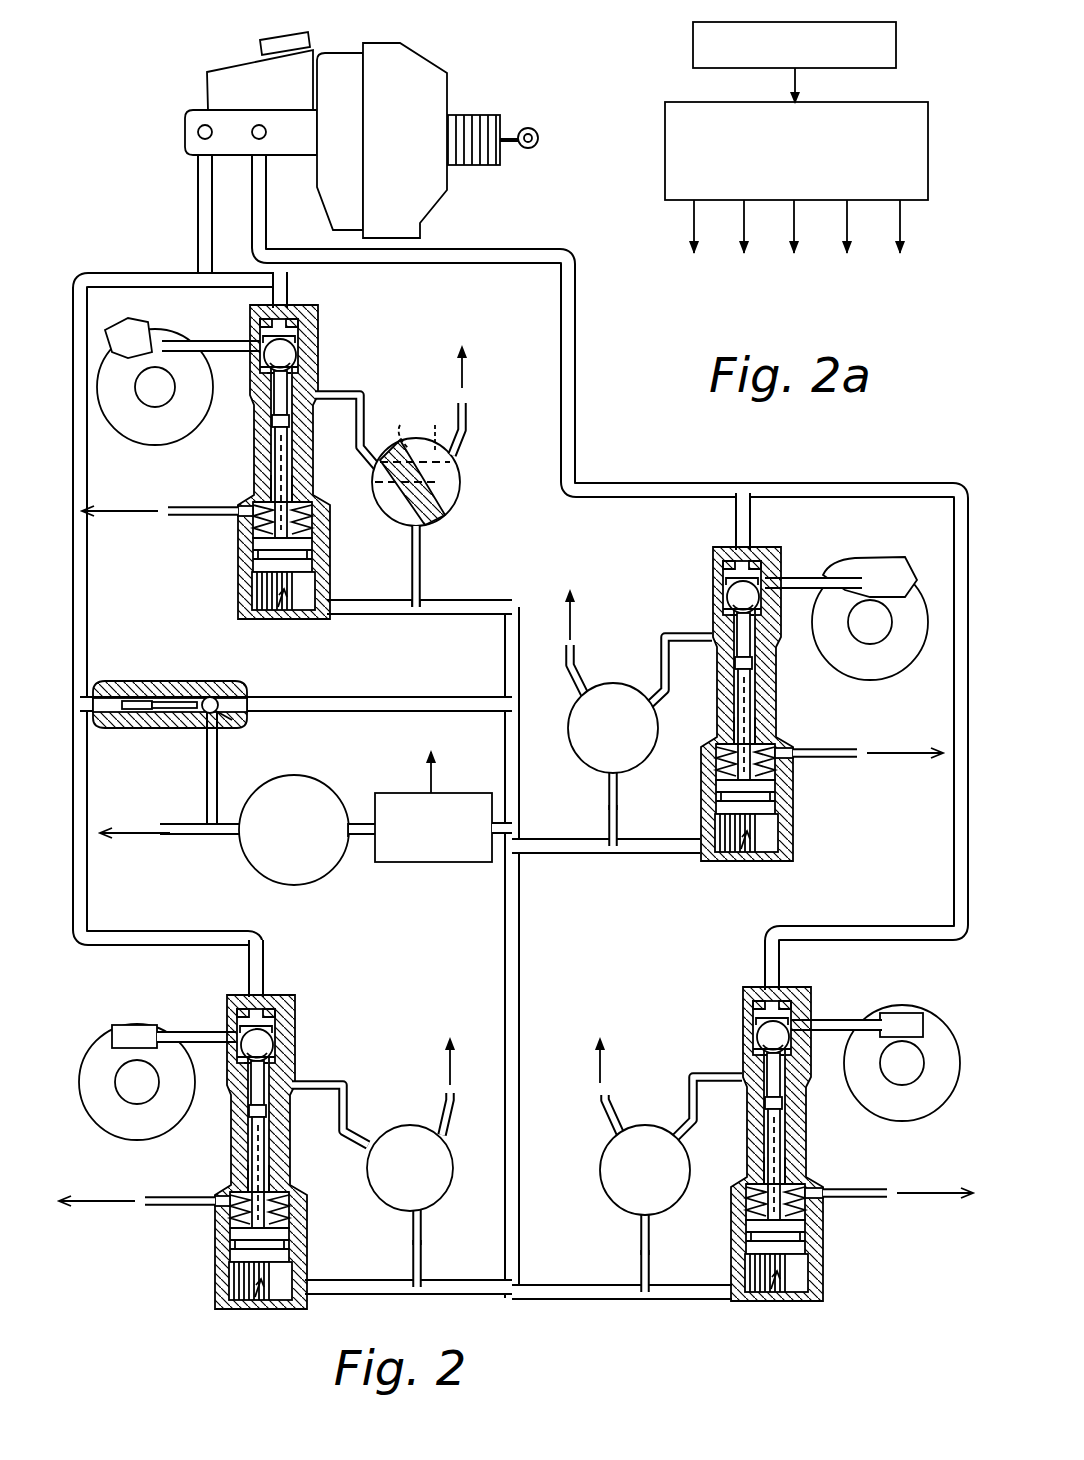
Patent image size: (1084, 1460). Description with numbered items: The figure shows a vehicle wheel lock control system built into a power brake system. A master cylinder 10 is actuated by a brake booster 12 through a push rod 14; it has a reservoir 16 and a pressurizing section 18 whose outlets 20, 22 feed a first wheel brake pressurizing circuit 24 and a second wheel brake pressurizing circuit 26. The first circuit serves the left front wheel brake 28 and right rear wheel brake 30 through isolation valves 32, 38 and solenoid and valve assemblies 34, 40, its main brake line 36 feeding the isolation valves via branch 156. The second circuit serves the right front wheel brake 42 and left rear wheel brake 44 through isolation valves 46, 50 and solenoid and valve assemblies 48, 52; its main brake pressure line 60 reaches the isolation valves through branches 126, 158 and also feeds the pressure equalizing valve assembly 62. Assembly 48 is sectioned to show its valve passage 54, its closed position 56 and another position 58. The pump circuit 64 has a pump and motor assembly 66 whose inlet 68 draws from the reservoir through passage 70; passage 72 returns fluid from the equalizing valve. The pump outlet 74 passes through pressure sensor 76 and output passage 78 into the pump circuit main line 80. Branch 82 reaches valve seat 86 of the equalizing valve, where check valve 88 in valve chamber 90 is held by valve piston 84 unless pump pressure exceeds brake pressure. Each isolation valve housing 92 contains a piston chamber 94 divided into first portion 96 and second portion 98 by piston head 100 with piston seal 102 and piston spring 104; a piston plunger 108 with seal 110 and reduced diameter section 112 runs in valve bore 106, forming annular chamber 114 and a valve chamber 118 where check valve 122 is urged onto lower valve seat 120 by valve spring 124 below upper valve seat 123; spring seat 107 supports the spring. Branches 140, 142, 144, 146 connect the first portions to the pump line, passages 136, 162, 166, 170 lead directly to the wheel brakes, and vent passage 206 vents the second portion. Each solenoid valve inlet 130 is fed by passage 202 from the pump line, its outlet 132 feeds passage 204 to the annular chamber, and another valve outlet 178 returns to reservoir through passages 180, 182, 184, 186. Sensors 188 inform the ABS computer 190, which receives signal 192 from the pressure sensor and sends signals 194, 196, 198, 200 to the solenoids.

In FIG. 2, the master cylinder 10 is at (196, 68).
In FIG. 2, the brake booster 12 is at (342, 70).
In FIG. 2, the push rod 14 is at (531, 128).
In FIG. 2, the reservoir 16 is at (240, 85).
In FIG. 2, the pressurizing section 18 is at (236, 135).
In FIG. 2, the outlet 20 is at (266, 137).
In FIG. 2, the outlet 22 is at (198, 132).
In FIG. 2, the first wheel brake pressurizing circuit 24 is at (470, 241).
In FIG. 2, the second wheel brake pressurizing circuit 26 is at (126, 260).
In FIG. 2, the left front wheel brake 28 is at (905, 570).
In FIG. 2, the right rear wheel brake 30 is at (925, 1015).
In FIG. 2, the isolation valve 32 is at (710, 733).
In FIG. 2, the solenoid operated valve 34 is at (605, 650).
In FIG. 2, the main brake line 36 is at (577, 388).
In FIG. 2, the isolation valve 38 is at (745, 1155).
In FIG. 2, the solenoid and valve assembly 40 is at (632, 1118).
In FIG. 2, the right front wheel brake 42 is at (128, 335).
In FIG. 2, the left rear wheel brake 44 is at (112, 1025).
In FIG. 2, the isolation valve 46 is at (236, 510).
In FIG. 2, the solenoid and valve assembly 48 is at (464, 517).
In FIG. 2, the isolation valve 50 is at (314, 1204).
In FIG. 2, the solenoid and valve assembly 52 is at (383, 1118).
In FIG. 2, the valve passage 54 is at (410, 535).
In FIG. 2, the closed position 56 is at (393, 423).
In FIG. 2, the another position 58 is at (432, 424).
In FIG. 2, the main brake pressure line 60 is at (78, 274).
In FIG. 2, the pressure equalizing valve assembly 62 is at (112, 696).
In FIG. 2, the pump circuit 64 is at (502, 946).
In FIG. 2, the pump and motor assembly 66 is at (309, 890).
In FIG. 2, the pump inlet 68 is at (240, 810).
In FIG. 2, the passage 70 is at (218, 836).
In FIG. 2, the passage 72 is at (206, 762).
In FIG. 2, the pump outlet 74 is at (351, 846).
In FIG. 2, the pressure sensor 76 is at (440, 863).
In FIG. 2, the output passage 78 is at (353, 820).
In FIG. 2, the pump circuit main line 80 is at (535, 744).
In FIG. 2, the branch 82 is at (355, 697).
In FIG. 2, the valve piston 84 is at (140, 700).
In FIG. 2, the valve seat 86 is at (228, 716).
In FIG. 2, the check valve 88 is at (212, 696).
In FIG. 2, the valve chamber 90 is at (186, 700).
In FIG. 2, the isolation valve housing 92 is at (249, 485).
In FIG. 2, the piston chamber 94 is at (282, 607).
In FIG. 2, the first portion 96 is at (320, 619).
In FIG. 2, the second portion 98 is at (245, 515).
In FIG. 2, the piston head 100 is at (315, 591).
In FIG. 2, the piston seal 102 is at (312, 559).
In FIG. 2, the piston spring 104 is at (312, 555).
In FIG. 2, the valve bore 106 is at (312, 515).
In FIG. 2, the spring seat 107 is at (312, 535).
In FIG. 2, the piston plunger 108 is at (287, 450).
In FIG. 2, the seal 110 is at (289, 421).
In FIG. 2, the reduced diameter section 112 is at (274, 395).
In FIG. 2, the annular chamber 114 is at (271, 435).
In FIG. 2, the valve chamber 118 is at (298, 325).
In FIG. 2, the lower valve seat 120 is at (298, 369).
In FIG. 2, the check valve 122 is at (296, 355).
In FIG. 2, the upper valve seat 123 is at (263, 341).
In FIG. 2, the valve spring 124 is at (298, 319).
In FIG. 2, the branch 126 is at (291, 292).
In FIG. 2, the solenoid operated valve inlet 130 is at (422, 548).
In FIG. 2, the solenoid valve outlet 132 is at (292, 485).
In FIG. 2, the branch 136 is at (175, 330).
In FIG. 2, the branch 140 is at (398, 615).
In FIG. 2, the branch 142 is at (560, 854).
In FIG. 2, the branch 144 is at (600, 1300).
In FIG. 2, the branch 146 is at (455, 1295).
In FIG. 2, the branch 156 is at (766, 938).
In FIG. 2, the branch 158 is at (265, 965).
In FIG. 2, the passage 162 is at (865, 560).
In FIG. 2, the passage 166 is at (892, 1010).
In FIG. 2, the passage 170 is at (178, 1032).
In FIG. 2, the valve outlet 178 is at (468, 440).
In FIG. 2, the passage 180 is at (470, 410).
In FIG. 2, the passage 182 is at (577, 650).
In FIG. 2, the passage 184 is at (598, 1100).
In FIG. 2, the passage 186 is at (455, 1115).
In FIG. 2A, the sensors 188 is at (735, 41).
In FIG. 2A, the ABS computer 190 is at (697, 118).
In FIG. 2, the signal 192 is at (438, 778).
In FIG. 2A, the signal 192 is at (692, 205).
In FIG. 2A, the signal 194 is at (742, 205).
In FIG. 2A, the signal 196 is at (792, 205).
In FIG. 2A, the signal 198 is at (845, 205).
In FIG. 2A, the signal 200 is at (898, 205).
In FIG. 2, the passage 202 is at (422, 580).
In FIG. 2, the passage 204 is at (362, 393).
In FIG. 2, the vent passage 206 is at (190, 513).